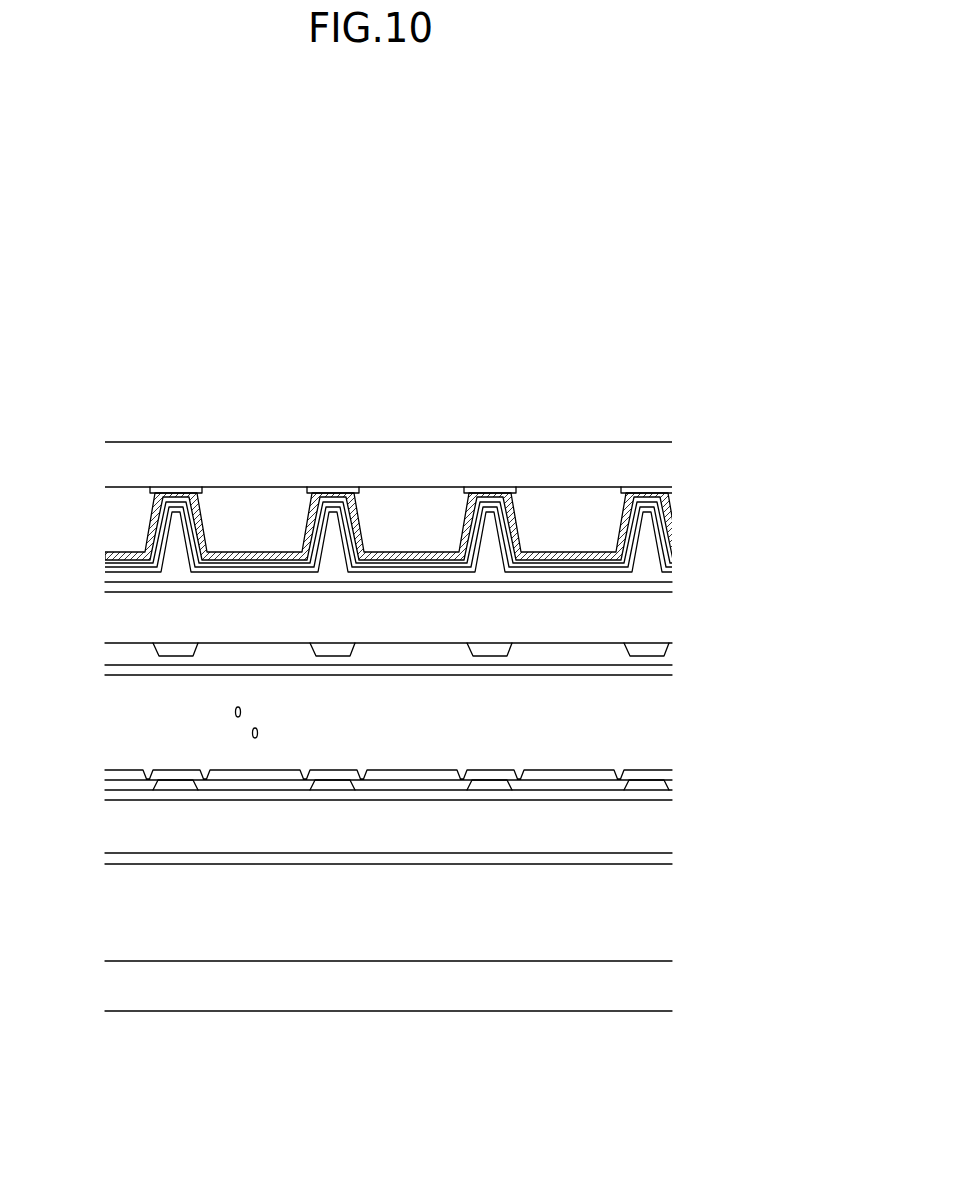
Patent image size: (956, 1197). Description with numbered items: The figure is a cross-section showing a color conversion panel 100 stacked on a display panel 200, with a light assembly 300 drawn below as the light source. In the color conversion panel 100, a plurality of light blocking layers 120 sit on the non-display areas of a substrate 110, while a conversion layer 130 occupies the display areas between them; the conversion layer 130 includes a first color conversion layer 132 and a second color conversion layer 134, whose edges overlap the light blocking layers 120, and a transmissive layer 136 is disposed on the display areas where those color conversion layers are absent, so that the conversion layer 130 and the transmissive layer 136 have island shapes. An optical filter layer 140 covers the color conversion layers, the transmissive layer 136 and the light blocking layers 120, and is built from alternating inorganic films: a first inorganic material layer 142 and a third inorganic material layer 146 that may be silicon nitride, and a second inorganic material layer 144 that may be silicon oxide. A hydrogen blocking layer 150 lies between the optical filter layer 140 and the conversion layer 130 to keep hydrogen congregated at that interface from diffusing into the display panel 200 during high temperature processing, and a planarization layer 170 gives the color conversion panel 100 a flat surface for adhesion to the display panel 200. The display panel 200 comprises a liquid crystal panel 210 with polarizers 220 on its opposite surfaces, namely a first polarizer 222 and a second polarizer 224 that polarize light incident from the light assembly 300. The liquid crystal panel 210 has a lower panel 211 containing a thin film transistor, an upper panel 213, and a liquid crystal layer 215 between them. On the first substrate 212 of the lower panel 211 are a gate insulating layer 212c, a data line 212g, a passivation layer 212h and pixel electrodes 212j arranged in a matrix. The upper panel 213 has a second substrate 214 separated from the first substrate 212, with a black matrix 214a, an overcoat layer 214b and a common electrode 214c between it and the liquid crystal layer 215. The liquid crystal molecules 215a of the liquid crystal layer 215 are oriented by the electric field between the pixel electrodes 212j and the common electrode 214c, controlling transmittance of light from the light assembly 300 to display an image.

The color conversion panel 100 is at (103, 443).
The substrate 110 is at (137, 450).
The light blocking layer 120 is at (181, 493).
The conversion layer 130 is at (639, 287).
The first color conversion layer 132 is at (257, 520).
The second color conversion layer 134 is at (414, 510).
The transmissive layer 136 is at (608, 515).
The optical filter layer 140 is at (598, 400).
The first inorganic material layer 142 is at (541, 562).
The second inorganic material layer 144 is at (551, 567).
The third inorganic material layer 146 is at (566, 571).
The hydrogen blocking layer 150 is at (332, 493).
The planarization layer 170 is at (662, 577).
The display panel 200 is at (58, 582).
The liquid crystal panel 210 is at (103, 592).
The lower panel 211 is at (675, 768).
The first substrate 212 is at (388, 819).
The gate insulating layer 212c is at (376, 797).
The data line 212g is at (175, 790).
The passivation layer 212h is at (277, 790).
The pixel electrode 212j is at (433, 778).
The upper panel 213 is at (675, 592).
The second substrate 214 is at (401, 674).
The black matrix 214a is at (334, 657).
The overcoat layer 214b is at (540, 657).
The common electrode 214c is at (148, 657).
The liquid crystal layer 215 is at (675, 675).
The liquid crystal molecule 215a is at (260, 733).
The polarizer 220 is at (434, 293).
The first polarizer 222 is at (645, 860).
The second polarizer 224 is at (588, 587).
The light assembly 300 is at (658, 985).